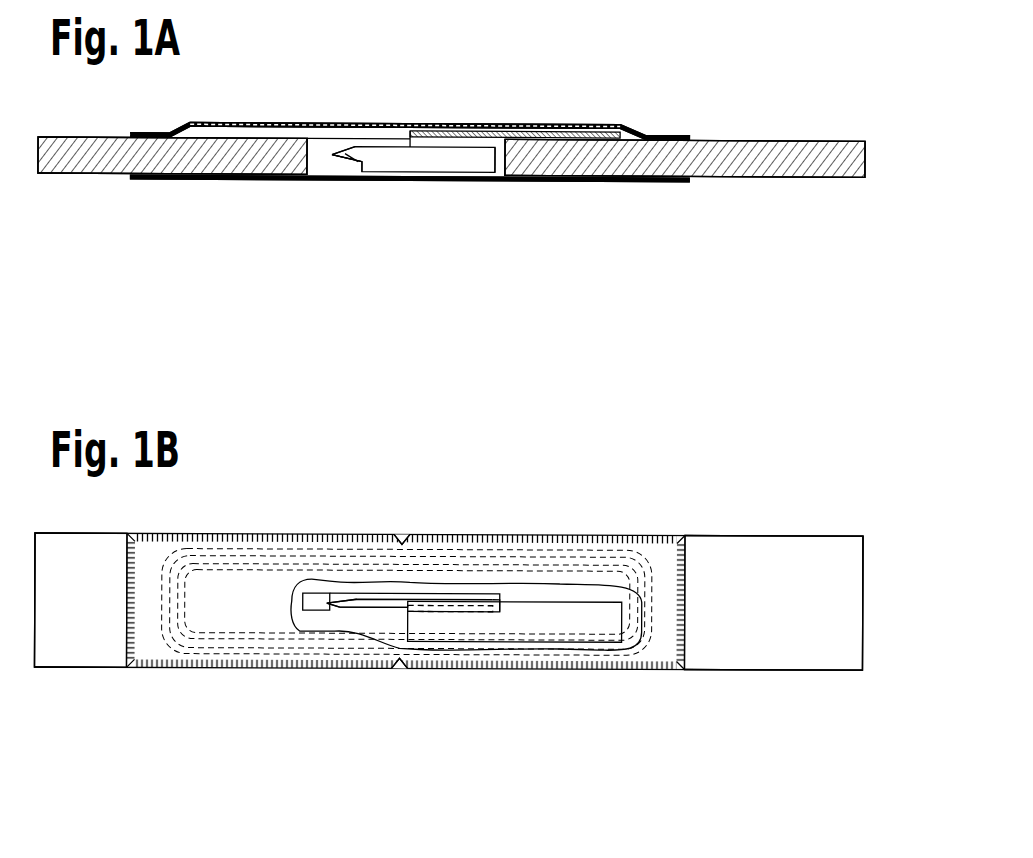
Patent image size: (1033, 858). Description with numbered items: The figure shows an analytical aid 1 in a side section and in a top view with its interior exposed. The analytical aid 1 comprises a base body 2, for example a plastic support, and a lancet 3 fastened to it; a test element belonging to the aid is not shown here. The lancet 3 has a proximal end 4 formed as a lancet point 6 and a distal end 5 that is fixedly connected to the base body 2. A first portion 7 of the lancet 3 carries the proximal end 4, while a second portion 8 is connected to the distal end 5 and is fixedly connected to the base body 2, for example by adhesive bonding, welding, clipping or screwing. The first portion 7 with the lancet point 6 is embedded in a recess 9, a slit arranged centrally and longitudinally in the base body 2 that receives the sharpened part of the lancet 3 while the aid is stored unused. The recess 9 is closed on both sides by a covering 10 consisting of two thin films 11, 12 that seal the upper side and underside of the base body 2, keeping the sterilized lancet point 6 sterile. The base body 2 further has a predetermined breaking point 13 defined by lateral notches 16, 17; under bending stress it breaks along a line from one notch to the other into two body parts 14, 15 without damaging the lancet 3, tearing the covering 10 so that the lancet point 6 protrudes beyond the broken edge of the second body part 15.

In FIG. 1A, the analytical aid 1 is at (297, 99).
In FIG. 1B, the analytical aid 1 is at (671, 506).
In FIG. 1A, the base body 2 is at (451, 156).
In FIG. 1B, the base body 2 is at (448, 643).
In FIG. 1A, the lancet 3 is at (394, 160).
In FIG. 1B, the lancet 3 is at (372, 602).
In FIG. 1A, the proximal end 4 is at (362, 162).
In FIG. 1B, the proximal end 4 is at (360, 602).
In FIG. 1A, the distal end 5 is at (481, 152).
In FIG. 1B, the distal end 5 is at (465, 602).
In FIG. 1A, the lancet point 6 is at (333, 158).
In FIG. 1B, the lancet point 6 is at (320, 604).
In FIG. 1A, the first portion 7 is at (445, 152).
In FIG. 1B, the first portion 7 is at (432, 602).
In FIG. 1A, the second portion 8 is at (530, 124).
In FIG. 1B, the second portion 8 is at (517, 622).
In FIG. 1A, the recess 9 is at (318, 150).
In FIG. 1B, the recess 9 is at (315, 600).
In FIG. 1A, the covering 10 is at (410, 156).
In FIG. 1B, the covering 10 is at (588, 582).
In FIG. 1A, the thin film 11 is at (580, 124).
In FIG. 1A, the thin film 12 is at (598, 180).
In FIG. 1B, the predetermined breaking point 13 is at (407, 605).
In FIG. 1A, the first body part 14 is at (90, 152).
In FIG. 1B, the first body part 14 is at (82, 612).
In FIG. 1A, the second body part 15 is at (765, 152).
In FIG. 1B, the second body part 15 is at (775, 612).
In FIG. 1B, the lateral notch 16 is at (402, 533).
In FIG. 1B, the lateral notch 17 is at (400, 667).